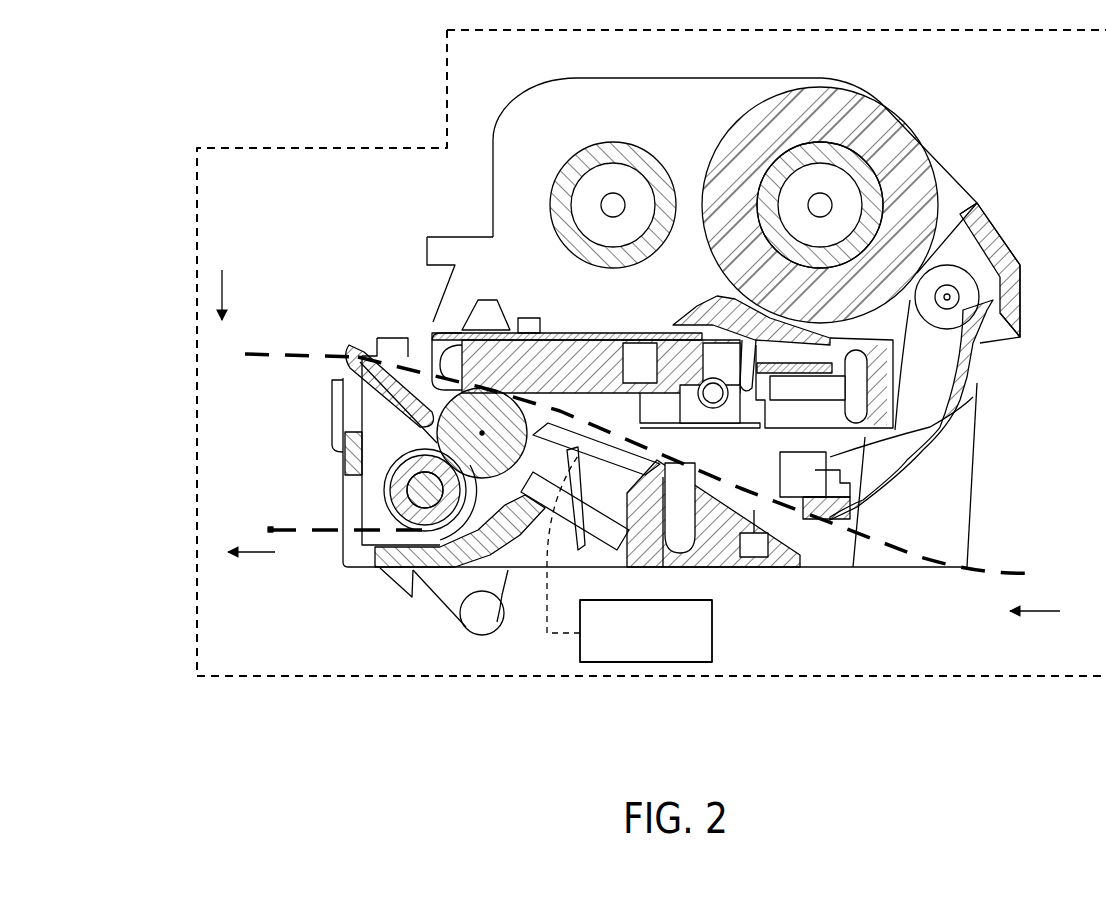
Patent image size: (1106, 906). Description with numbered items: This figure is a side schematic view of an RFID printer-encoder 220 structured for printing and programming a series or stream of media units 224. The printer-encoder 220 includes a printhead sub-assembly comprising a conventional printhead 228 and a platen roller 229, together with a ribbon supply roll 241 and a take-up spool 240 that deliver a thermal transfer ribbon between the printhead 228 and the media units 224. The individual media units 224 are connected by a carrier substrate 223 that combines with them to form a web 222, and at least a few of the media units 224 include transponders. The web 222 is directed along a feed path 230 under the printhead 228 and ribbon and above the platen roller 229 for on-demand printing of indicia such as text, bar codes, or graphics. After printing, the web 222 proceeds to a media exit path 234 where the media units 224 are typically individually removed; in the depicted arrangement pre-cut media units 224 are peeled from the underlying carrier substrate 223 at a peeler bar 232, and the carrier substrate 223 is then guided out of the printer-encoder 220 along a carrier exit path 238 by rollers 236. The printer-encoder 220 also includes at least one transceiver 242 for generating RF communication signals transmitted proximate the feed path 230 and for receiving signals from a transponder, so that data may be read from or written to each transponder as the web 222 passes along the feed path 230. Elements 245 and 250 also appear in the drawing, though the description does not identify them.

The RFID printer-encoder 220 is at (268, 148).
The web 222 is at (1030, 573).
The carrier substrate 223 is at (425, 425).
The media units 224 is at (282, 347).
The printhead 228 is at (433, 322).
The platen roller 229 is at (465, 450).
The feed path 230 is at (1058, 609).
The peeler bar 232 is at (440, 437).
The media exit path 234 is at (225, 280).
The rollers 236 is at (420, 493).
The carrier exit path 238 is at (253, 569).
The take-up spool 240 is at (604, 150).
The ribbon supply roll 241 is at (878, 116).
The transceiver 242 is at (629, 557).
The sensor 245 is at (810, 465).
The roller 250 is at (578, 450).